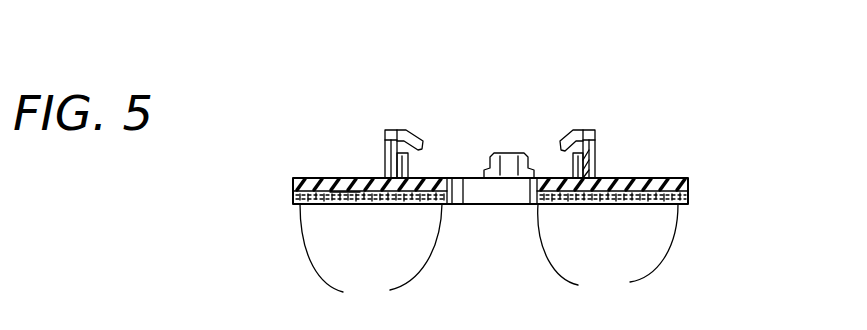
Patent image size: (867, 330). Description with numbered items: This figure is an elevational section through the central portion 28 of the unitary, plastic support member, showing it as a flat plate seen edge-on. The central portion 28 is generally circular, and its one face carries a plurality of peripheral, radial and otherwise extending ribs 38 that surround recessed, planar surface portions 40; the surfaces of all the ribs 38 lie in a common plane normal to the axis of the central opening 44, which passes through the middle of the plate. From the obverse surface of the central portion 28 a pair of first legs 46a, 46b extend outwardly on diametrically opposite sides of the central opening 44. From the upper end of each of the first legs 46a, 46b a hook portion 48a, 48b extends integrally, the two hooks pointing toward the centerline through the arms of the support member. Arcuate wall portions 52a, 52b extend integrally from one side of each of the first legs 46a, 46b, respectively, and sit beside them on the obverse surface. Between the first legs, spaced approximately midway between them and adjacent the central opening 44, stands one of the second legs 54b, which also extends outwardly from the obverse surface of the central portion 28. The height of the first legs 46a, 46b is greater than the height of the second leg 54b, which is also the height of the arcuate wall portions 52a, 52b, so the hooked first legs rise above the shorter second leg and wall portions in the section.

The central portion 28 is at (293, 186).
The ribs 38 is at (489, 256).
The recessed planar surface portions 40 is at (341, 205).
The central opening 44 is at (510, 204).
The first leg 46a is at (384, 150).
The first leg 46b is at (595, 143).
The hook portion 48a is at (411, 137).
The hook portion 48b is at (573, 137).
The arcuate wall portion 52a is at (411, 165).
The arcuate wall portion 52b is at (597, 170).
The second leg 54b is at (519, 160).